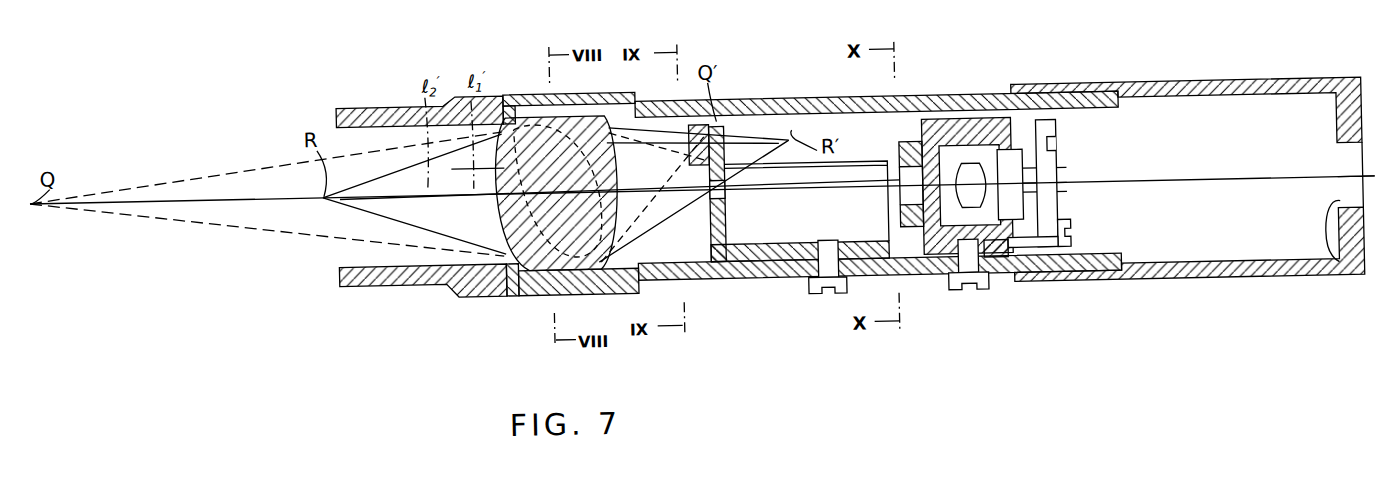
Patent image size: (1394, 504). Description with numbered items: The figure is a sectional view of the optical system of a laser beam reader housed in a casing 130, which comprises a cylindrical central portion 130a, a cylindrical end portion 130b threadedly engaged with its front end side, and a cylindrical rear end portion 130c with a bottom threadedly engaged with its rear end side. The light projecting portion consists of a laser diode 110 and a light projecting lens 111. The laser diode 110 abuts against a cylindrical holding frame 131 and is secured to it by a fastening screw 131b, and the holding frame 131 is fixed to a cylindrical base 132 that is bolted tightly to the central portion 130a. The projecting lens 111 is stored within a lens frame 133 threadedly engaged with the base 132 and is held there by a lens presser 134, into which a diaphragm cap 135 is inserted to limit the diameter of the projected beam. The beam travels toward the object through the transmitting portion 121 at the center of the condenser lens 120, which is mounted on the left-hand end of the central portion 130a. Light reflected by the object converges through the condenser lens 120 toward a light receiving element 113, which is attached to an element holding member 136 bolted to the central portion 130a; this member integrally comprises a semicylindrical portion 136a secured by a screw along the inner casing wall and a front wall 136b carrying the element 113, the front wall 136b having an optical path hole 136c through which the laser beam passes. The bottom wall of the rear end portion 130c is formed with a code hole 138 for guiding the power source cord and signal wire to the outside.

The casing 130 is at (776, 113).
The cylindrical central portion 130a is at (814, 115).
The cylindrical end portion 130b is at (386, 115).
The cylindrical rear end portion 130c is at (1101, 106).
The condenser lens 120 is at (497, 274).
The transmitting portion 121 is at (618, 216).
The light receiving element 113 is at (710, 141).
The element holding member 136 is at (792, 222).
The semicylindrical portion 136a is at (798, 259).
The front wall 136b is at (725, 249).
The optical path hole 136c is at (723, 212).
The diaphragm cap 135 is at (903, 160).
The lens presser 134 is at (950, 139).
The light projecting lens 111 is at (968, 182).
The laser diode 110 is at (1011, 192).
The cylindrical holding frame 131 is at (1060, 221).
The fastening screw 131b is at (1050, 168).
The cylindrical base 132 is at (941, 270).
The lens frame 133 is at (996, 278).
The code hole 138 is at (1337, 291).